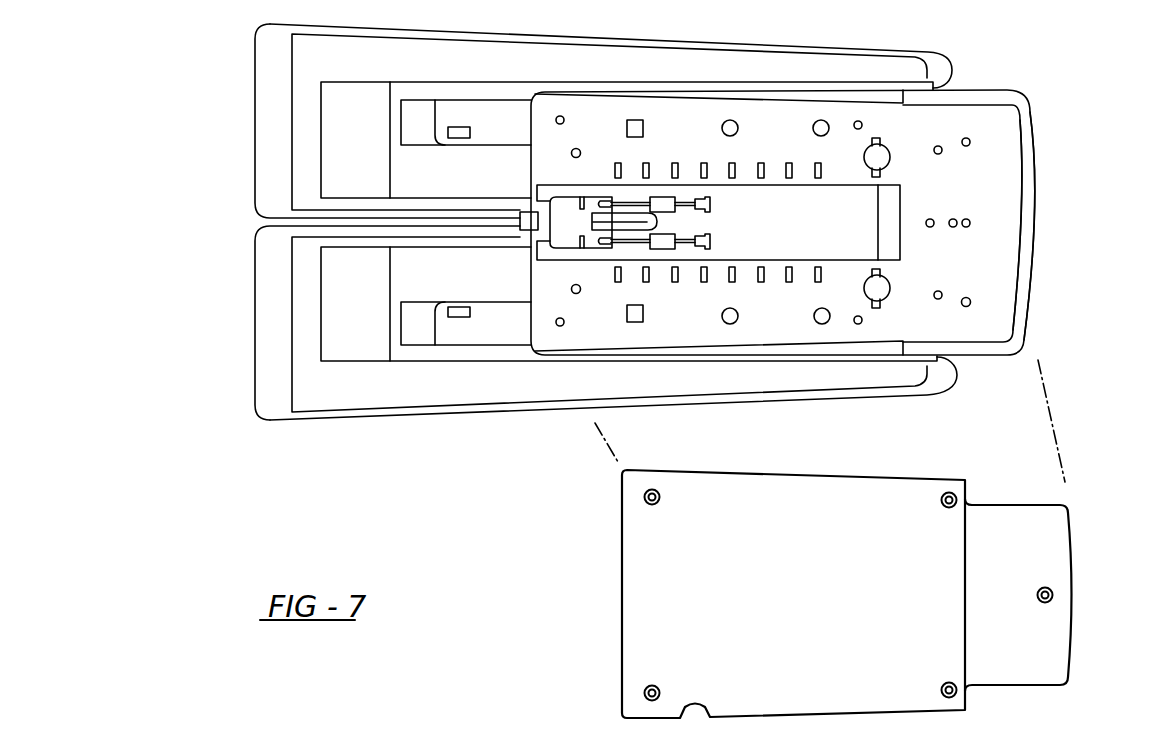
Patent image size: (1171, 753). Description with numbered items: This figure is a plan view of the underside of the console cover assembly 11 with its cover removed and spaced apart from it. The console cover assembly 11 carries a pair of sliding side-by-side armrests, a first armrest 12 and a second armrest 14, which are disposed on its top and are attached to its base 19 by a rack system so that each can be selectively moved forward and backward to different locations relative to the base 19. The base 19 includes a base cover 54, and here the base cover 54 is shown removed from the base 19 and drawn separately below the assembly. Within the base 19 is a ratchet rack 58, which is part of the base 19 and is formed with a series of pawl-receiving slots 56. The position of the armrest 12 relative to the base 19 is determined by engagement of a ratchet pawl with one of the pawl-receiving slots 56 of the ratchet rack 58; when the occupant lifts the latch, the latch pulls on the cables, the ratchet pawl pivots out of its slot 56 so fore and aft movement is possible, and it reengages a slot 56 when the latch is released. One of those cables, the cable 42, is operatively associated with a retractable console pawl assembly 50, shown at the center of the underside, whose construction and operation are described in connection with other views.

The console cover assembly 11 is at (990, 90).
The first armrest 12 is at (254, 325).
The second armrest 14 is at (254, 122).
The base 19 is at (1000, 165).
The cable 42 is at (684, 198).
The retractable console pawl assembly 50 is at (525, 225).
The base cover 54 is at (1045, 637).
The pawl-receiving slots 56 is at (617, 163).
The ratchet rack 58 is at (845, 165).